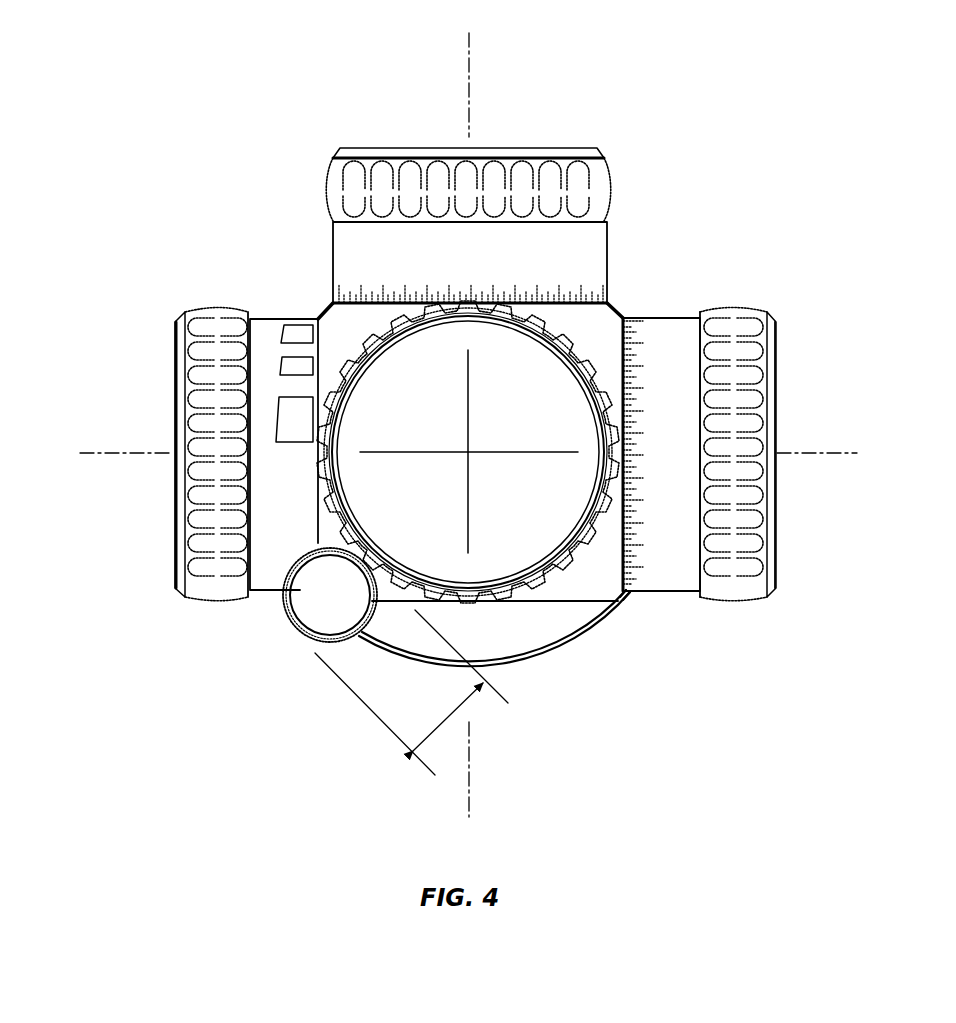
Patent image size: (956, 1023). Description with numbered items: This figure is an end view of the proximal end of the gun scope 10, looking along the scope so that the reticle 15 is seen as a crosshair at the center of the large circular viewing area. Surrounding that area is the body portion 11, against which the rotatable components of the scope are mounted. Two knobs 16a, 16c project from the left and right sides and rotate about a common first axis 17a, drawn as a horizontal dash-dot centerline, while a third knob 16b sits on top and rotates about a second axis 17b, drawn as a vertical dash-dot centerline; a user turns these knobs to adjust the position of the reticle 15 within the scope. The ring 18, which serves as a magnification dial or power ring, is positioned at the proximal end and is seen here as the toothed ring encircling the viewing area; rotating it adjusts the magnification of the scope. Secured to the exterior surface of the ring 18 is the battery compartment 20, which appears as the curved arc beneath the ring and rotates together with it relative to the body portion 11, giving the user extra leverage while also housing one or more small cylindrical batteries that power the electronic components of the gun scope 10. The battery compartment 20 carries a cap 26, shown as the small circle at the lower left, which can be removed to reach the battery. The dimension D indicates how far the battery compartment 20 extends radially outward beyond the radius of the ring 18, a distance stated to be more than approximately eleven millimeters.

The gun scope 10 is at (264, 137).
The body portion 11 is at (592, 318).
The reticle 15 is at (437, 428).
The knob 16a is at (175, 358).
The knob 16b is at (563, 148).
The knob 16c is at (748, 315).
The first axis 17a is at (110, 453).
The second axis 17b is at (472, 53).
The ring 18 is at (572, 553).
The battery compartment 20 is at (275, 638).
The cap 26 is at (303, 633).
The distance D is at (411, 692).